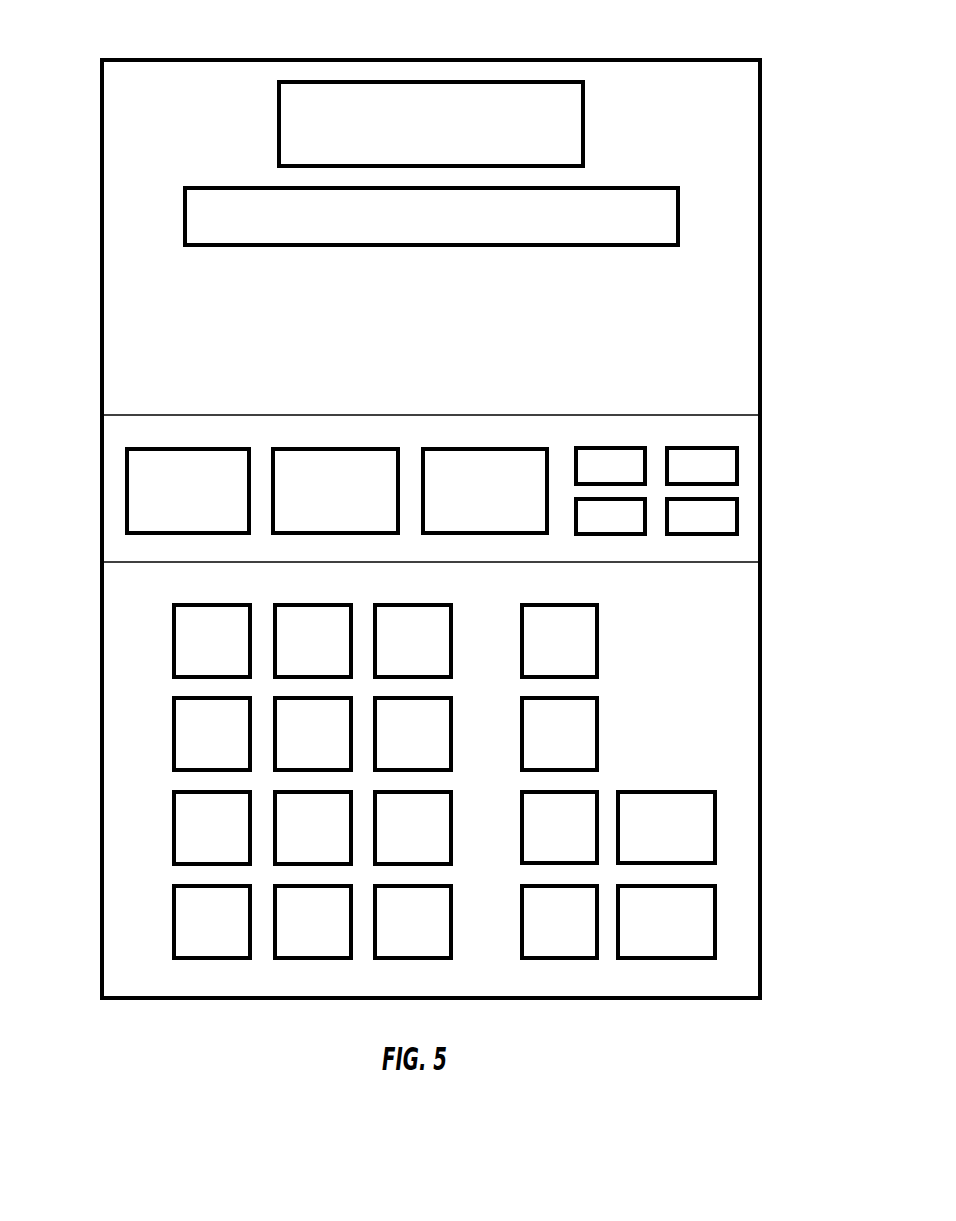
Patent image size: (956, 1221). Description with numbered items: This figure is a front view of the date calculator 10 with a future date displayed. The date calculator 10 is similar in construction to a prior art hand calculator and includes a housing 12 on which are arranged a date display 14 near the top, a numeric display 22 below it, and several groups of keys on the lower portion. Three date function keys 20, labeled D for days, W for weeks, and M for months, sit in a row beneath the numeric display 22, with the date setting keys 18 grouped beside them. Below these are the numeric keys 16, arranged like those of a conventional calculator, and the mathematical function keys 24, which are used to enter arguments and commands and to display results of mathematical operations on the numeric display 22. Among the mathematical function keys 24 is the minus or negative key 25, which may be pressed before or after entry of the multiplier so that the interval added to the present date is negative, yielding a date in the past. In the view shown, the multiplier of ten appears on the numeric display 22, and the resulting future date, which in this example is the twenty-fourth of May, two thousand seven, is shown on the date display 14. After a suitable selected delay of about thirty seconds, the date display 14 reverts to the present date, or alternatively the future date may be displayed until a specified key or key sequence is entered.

The date calculator 10 is at (86, 141).
The housing 12 is at (118, 330).
The date display 14 is at (573, 110).
The numeric display 22 is at (662, 221).
The date function keys 20 is at (156, 541).
The date setting keys 18 is at (705, 545).
The numeric keys 16 is at (150, 823).
The mathematical function keys 24 is at (692, 740).
The minus key 25 is at (533, 843).